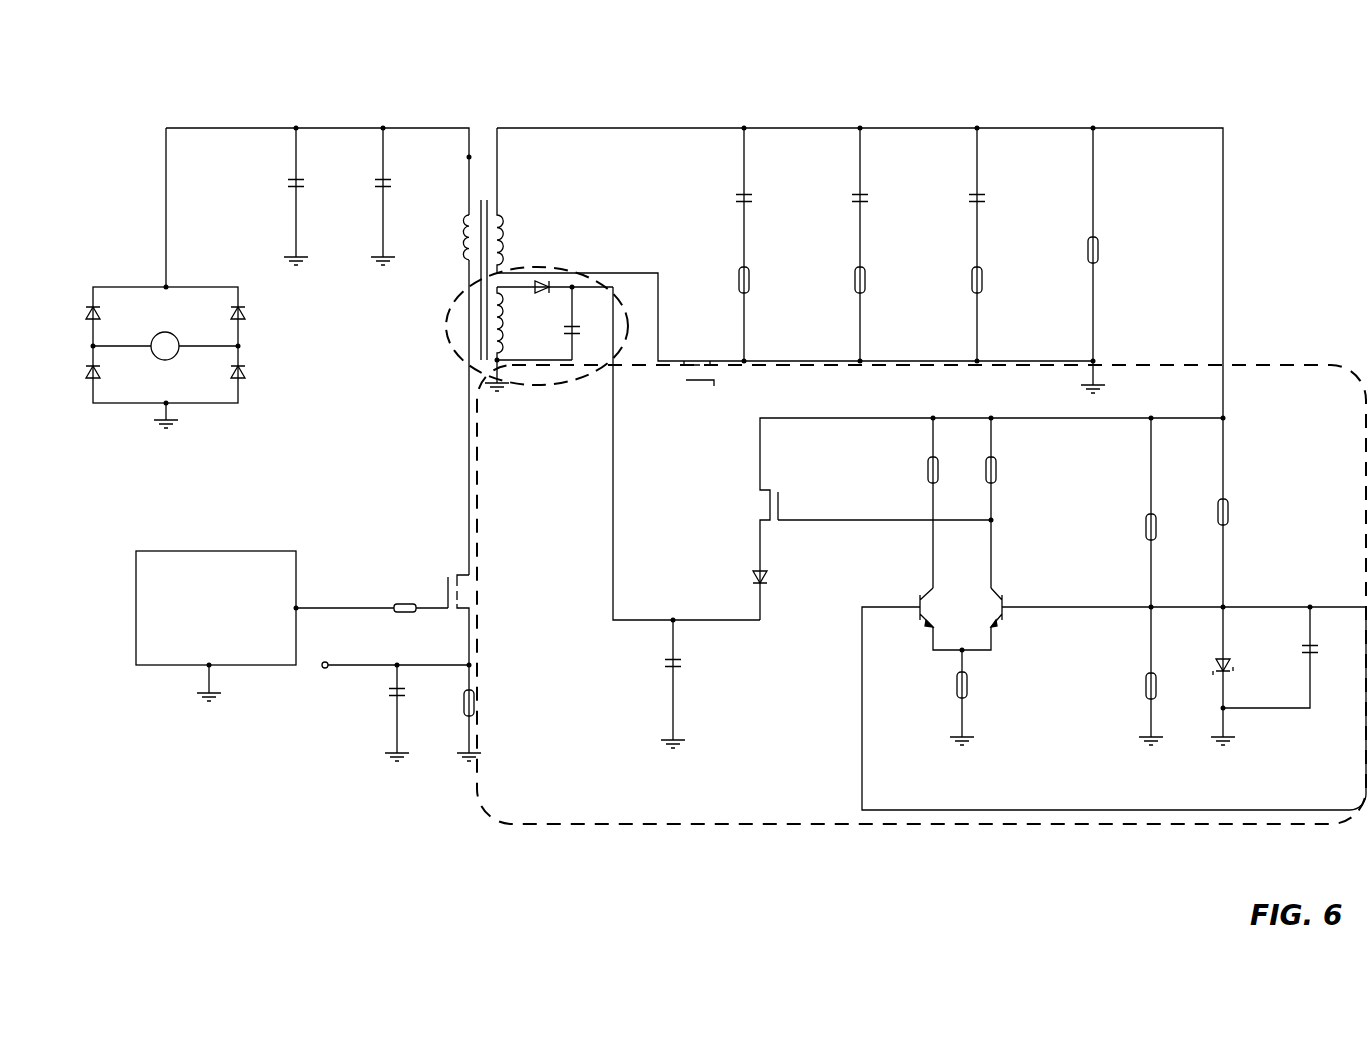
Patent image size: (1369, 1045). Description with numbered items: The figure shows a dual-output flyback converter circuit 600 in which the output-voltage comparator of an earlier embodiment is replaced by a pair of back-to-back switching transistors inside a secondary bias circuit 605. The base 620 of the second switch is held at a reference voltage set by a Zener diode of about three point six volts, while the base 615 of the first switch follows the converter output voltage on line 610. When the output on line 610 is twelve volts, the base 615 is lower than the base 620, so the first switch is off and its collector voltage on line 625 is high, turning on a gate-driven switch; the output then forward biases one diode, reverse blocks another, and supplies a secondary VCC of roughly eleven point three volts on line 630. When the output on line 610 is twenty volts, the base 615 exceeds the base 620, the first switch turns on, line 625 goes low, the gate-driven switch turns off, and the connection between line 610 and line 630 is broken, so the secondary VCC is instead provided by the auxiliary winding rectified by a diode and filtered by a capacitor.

The flyback converter circuit 600 is at (188, 86).
The secondary bias circuit 605 is at (602, 828).
The line 610 is at (1220, 125).
The base 615 is at (1032, 603).
The base 620 is at (882, 602).
The line 625 is at (991, 520).
The line 630 is at (703, 618).